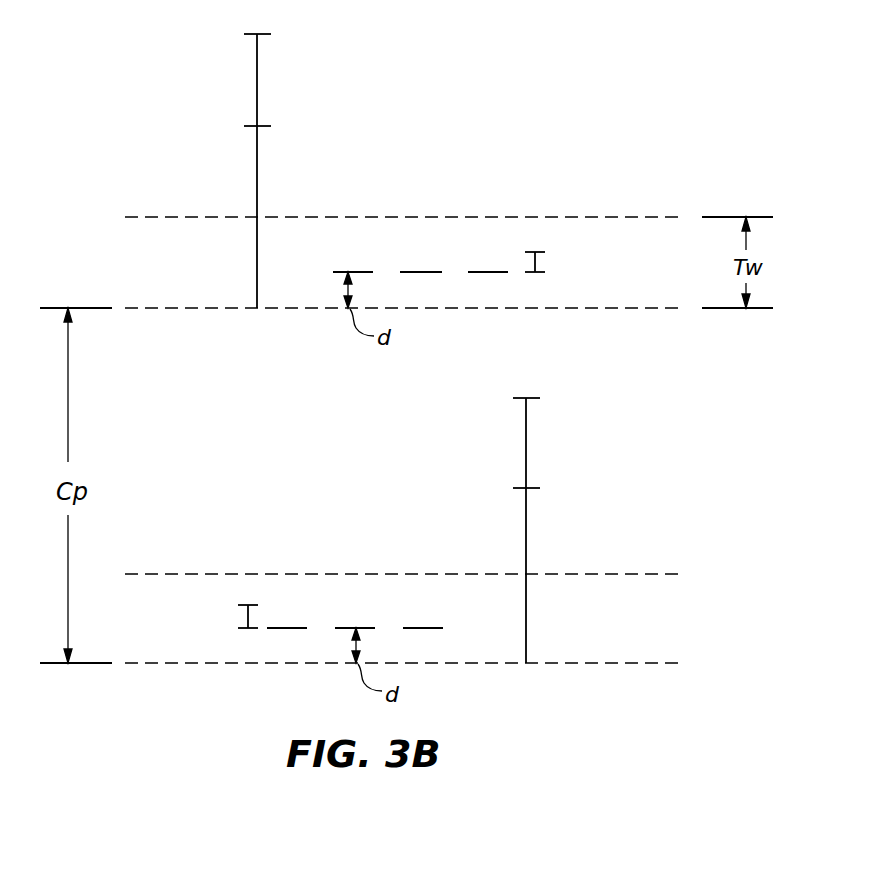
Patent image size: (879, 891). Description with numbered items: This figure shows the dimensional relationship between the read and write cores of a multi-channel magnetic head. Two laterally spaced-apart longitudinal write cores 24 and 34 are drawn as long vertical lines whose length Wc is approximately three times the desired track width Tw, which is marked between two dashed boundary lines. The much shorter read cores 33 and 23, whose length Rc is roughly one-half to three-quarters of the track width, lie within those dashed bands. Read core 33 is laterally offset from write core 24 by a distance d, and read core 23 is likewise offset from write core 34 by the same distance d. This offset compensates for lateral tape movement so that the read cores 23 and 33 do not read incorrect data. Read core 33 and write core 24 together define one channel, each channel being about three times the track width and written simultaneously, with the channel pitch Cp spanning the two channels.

The write core 24 is at (257, 170).
The read core 33 is at (535, 260).
The write core 34 is at (526, 525).
The read core 23 is at (247, 613).